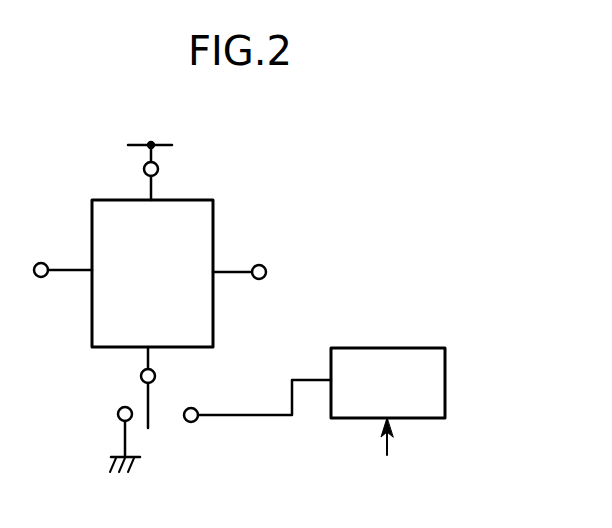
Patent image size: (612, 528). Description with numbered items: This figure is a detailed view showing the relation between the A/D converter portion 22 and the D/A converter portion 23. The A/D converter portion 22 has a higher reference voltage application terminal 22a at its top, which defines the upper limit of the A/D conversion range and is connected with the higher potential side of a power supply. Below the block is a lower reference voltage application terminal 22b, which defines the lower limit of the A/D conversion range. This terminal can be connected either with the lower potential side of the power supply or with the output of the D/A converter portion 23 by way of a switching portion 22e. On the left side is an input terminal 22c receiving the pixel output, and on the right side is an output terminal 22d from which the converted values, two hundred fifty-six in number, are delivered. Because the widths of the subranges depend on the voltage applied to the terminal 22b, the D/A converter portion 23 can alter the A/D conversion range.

The A/D converter portion 22 is at (213, 204).
The higher reference voltage application terminal 22a is at (159, 168).
The lower reference voltage application terminal 22b is at (156, 376).
The input terminal 22c is at (42, 262).
The output terminal 22d is at (266, 265).
The switching portion 22e is at (143, 395).
The D/A converter portion 23 is at (384, 348).